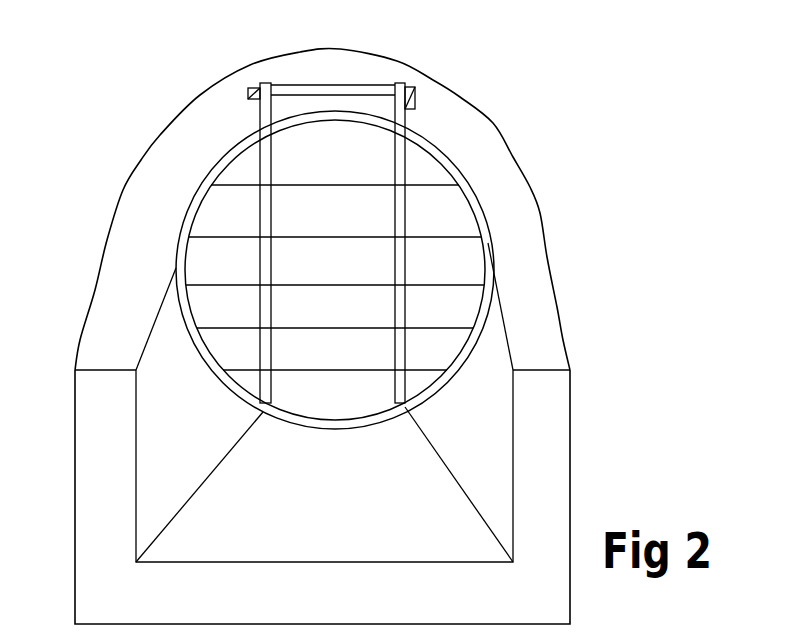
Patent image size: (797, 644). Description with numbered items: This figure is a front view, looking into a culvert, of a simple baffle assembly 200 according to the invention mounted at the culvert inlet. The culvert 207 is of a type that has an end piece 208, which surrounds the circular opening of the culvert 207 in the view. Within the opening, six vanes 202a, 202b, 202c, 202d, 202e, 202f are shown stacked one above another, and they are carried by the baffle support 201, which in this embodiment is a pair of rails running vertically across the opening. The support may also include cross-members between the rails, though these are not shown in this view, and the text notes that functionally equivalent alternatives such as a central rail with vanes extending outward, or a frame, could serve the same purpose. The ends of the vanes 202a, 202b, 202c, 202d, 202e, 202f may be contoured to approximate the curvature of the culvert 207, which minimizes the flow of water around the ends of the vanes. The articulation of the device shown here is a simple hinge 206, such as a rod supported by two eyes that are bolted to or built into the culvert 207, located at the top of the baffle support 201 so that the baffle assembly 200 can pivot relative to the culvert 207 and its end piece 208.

The baffle assembly 200 is at (335, 325).
The baffle support 201 is at (478, 211).
The vane 202a is at (363, 403).
The vane 202b is at (365, 362).
The vane 202c is at (365, 320).
The vane 202d is at (365, 277).
The vane 202e is at (365, 225).
The vane 202f is at (362, 175).
The hinge 206 is at (410, 83).
The culvert 207 is at (112, 143).
The end piece 208 is at (570, 393).